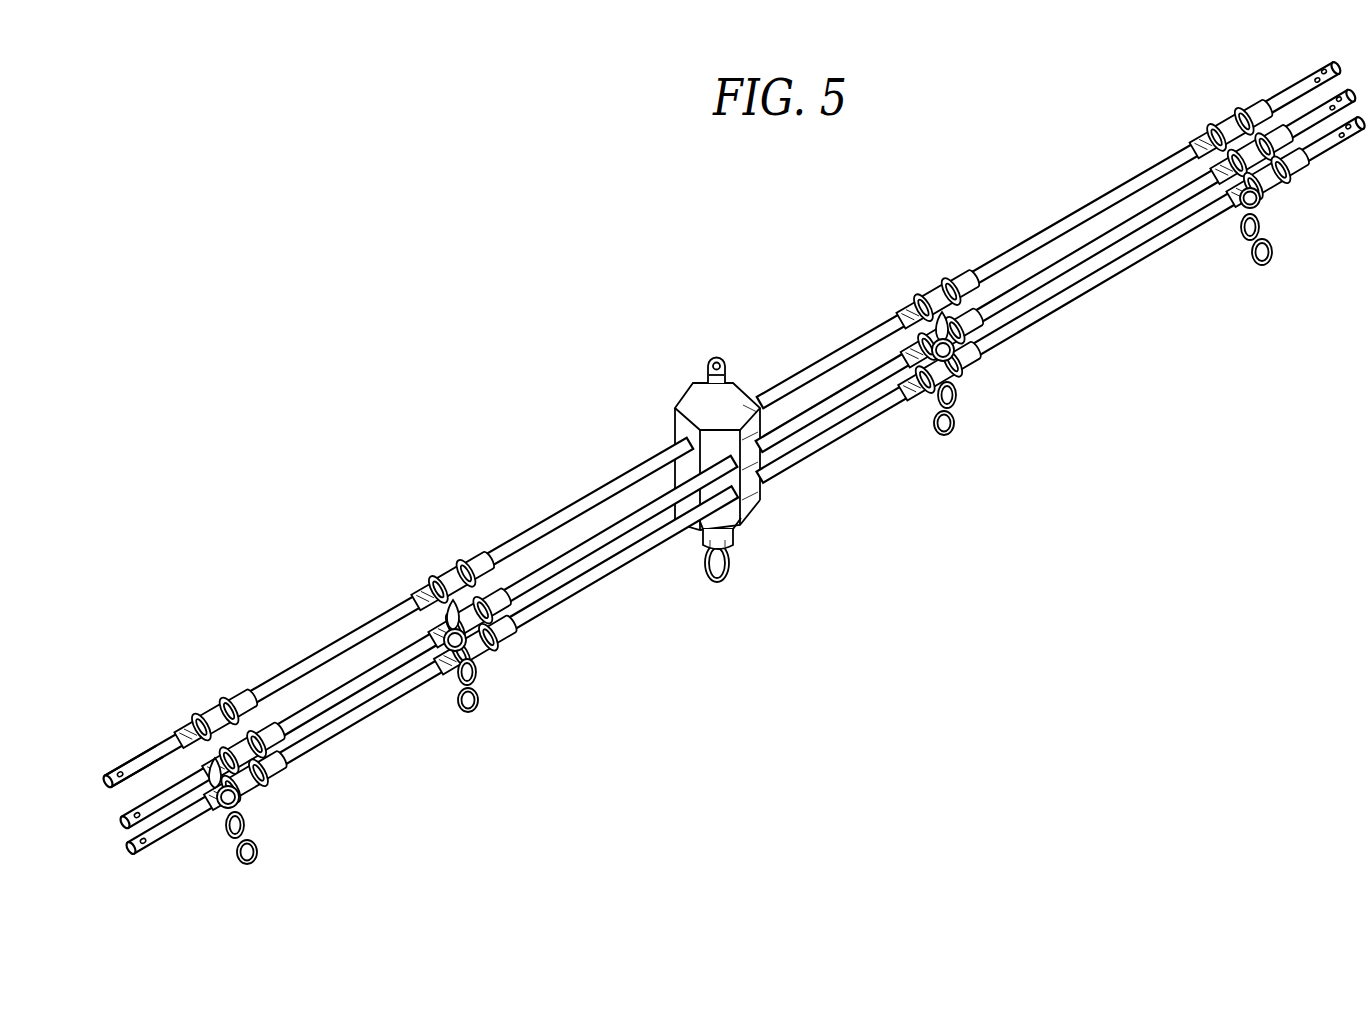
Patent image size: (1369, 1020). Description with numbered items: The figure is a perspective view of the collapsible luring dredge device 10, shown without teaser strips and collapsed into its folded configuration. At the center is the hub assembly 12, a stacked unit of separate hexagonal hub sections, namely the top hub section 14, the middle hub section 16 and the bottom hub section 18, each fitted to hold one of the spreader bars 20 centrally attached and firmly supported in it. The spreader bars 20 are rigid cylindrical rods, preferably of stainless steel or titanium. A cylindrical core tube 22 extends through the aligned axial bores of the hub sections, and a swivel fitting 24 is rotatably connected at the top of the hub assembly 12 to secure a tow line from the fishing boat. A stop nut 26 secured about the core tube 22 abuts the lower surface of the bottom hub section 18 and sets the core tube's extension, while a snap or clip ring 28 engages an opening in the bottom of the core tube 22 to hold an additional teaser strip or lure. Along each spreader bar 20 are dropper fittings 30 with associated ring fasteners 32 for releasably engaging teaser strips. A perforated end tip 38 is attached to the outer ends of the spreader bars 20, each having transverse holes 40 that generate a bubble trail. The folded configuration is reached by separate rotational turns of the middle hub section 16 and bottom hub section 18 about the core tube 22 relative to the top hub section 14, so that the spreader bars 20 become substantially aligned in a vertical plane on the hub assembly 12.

The collapsible luring dredge device 10 is at (723, 326).
The hub assembly 12 is at (745, 392).
The top hub section 14 is at (677, 402).
The middle hub section 16 is at (680, 428).
The bottom hub section 18 is at (770, 516).
The spreader bars 20 is at (273, 687).
The core tube 22 is at (735, 550).
The swivel fitting 24 is at (706, 372).
The stop nut 26 is at (745, 535).
The snap or clip ring 28 is at (720, 575).
The dropper fittings 30 is at (455, 557).
The ring fasteners 32 is at (475, 700).
The perforated end tip 38 is at (157, 745).
The transverse holes 40 is at (110, 779).